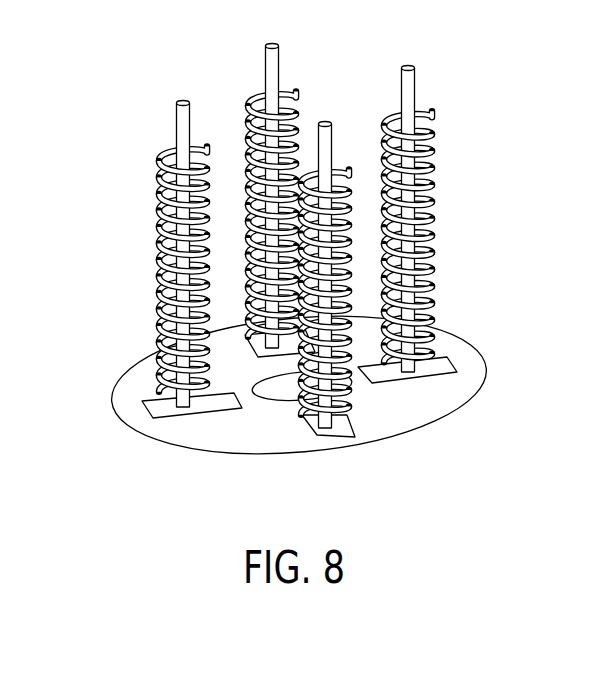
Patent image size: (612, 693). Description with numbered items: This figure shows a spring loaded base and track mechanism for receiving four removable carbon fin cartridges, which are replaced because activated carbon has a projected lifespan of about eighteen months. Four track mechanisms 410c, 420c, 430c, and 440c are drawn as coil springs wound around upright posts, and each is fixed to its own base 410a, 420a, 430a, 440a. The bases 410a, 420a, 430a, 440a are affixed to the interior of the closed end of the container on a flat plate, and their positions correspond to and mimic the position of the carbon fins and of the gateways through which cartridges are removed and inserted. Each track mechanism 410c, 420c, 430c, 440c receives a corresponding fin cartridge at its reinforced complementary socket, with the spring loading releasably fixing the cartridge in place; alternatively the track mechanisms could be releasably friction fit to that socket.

The base 410a is at (257, 357).
The track mechanism 410c is at (298, 104).
The base 420a is at (445, 363).
The track mechanism 420c is at (438, 183).
The base 430a is at (331, 437).
The track mechanism 430c is at (355, 397).
The base 440a is at (153, 407).
The track mechanism 440c is at (157, 210).